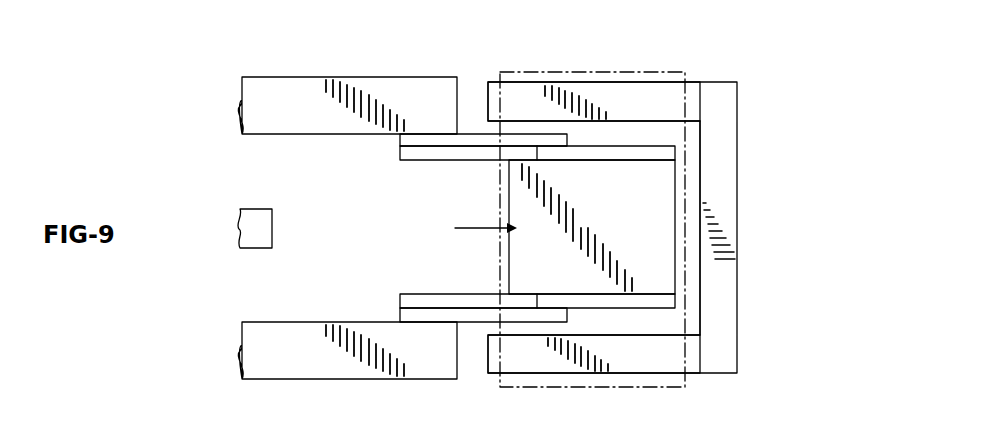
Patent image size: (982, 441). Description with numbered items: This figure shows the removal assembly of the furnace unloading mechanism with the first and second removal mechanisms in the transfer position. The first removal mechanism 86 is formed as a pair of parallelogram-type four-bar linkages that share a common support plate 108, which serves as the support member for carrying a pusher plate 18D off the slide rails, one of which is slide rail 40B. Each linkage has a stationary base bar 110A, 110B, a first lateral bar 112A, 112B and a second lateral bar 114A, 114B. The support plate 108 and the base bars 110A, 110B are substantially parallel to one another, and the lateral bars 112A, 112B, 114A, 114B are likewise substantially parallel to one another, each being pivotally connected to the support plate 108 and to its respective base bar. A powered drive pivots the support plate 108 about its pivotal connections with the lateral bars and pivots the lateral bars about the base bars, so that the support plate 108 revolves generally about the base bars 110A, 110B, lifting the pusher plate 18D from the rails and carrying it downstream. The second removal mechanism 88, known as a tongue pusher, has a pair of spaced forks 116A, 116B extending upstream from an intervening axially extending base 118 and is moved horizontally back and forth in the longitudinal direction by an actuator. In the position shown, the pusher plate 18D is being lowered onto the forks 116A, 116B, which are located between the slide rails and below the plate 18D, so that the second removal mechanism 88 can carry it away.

The slide rail 40B is at (240, 0).
The stationary base bar 110A is at (438, 141).
The first lateral bar 112A is at (473, 157).
The first lateral bar 112B is at (473, 297).
The stationary base bar 110B is at (438, 314).
The first removal mechanism 86 is at (637, 139).
The support plate 108 is at (657, 273).
The second lateral bar 114A is at (637, 158).
The second lateral bar 114B is at (637, 297).
The fork 116A is at (530, 92).
The fork 116B is at (538, 362).
The second removal mechanism 88 is at (713, 77).
The base 118 is at (730, 199).
The pusher plate 18D is at (692, 173).